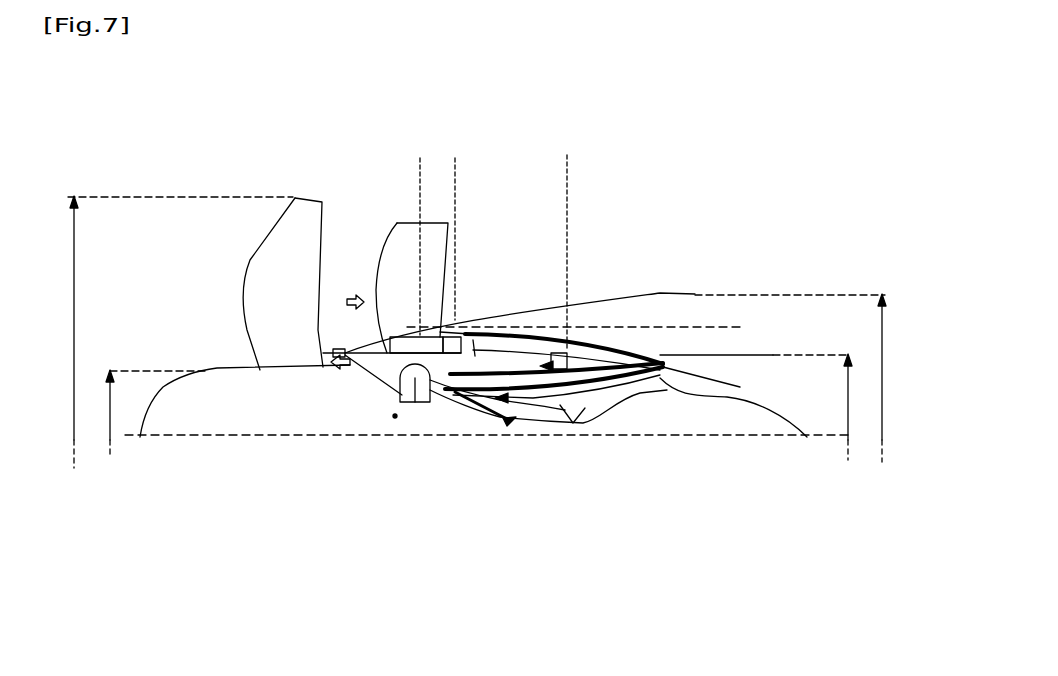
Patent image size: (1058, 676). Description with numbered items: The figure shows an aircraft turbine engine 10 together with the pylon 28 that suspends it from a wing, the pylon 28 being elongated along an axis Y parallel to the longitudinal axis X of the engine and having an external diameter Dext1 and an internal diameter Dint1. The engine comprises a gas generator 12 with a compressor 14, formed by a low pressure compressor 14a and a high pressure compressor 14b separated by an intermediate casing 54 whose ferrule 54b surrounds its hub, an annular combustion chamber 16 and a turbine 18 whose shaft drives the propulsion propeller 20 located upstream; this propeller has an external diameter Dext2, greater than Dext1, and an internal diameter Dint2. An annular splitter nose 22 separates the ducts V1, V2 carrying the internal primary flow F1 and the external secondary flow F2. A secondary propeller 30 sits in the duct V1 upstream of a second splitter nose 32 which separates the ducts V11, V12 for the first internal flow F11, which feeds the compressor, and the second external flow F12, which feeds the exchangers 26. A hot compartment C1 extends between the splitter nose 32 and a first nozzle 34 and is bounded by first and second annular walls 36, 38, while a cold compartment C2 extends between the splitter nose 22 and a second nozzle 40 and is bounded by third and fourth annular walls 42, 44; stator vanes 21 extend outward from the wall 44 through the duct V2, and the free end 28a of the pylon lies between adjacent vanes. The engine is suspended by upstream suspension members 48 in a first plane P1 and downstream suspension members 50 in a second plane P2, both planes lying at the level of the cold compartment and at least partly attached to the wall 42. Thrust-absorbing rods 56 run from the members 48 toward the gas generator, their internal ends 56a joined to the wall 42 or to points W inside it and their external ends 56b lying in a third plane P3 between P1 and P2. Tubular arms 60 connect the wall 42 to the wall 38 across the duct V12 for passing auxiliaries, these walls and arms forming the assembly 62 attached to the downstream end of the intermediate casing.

The aircraft turbine engine 10 is at (182, 343).
The gas generator 12 is at (226, 464).
The compressor 14 is at (505, 425).
The low pressure compressor 14a is at (452, 400).
The high pressure compressor 14b is at (512, 415).
The annular combustion chamber 16 is at (580, 405).
The turbine 18 is at (657, 380).
The propulsion propeller 20 is at (240, 277).
The stator vanes 21 is at (385, 242).
The annular splitter nose 22 is at (342, 352).
The exchangers 26 is at (636, 400).
The pylon 28 is at (515, 356).
The free end 28a is at (403, 337).
The secondary propeller 30 is at (414, 400).
The second annular splitter nose 32 is at (441, 353).
The first nozzle 34 is at (707, 387).
The first annular wall 36 is at (605, 405).
The second annular wall 38 is at (585, 405).
The second nozzle 40 is at (670, 397).
The third annular wall 42 is at (612, 352).
The fourth annular wall 44 is at (600, 360).
The upstream suspension members 48 is at (402, 368).
The downstream suspension members 50 is at (555, 392).
The intermediate casing 54 is at (535, 420).
The ferrule 54b is at (525, 350).
The thrust-absorbing rods 56 is at (436, 402).
The first radially internal ends 56a is at (400, 402).
The second radially external ends 56b is at (465, 360).
The tubular arms 60 is at (652, 385).
The assembly 62 is at (588, 337).
The first annular compartment C1 is at (660, 356).
The second annular compartment C2 is at (553, 366).
The internal primary flow F1 is at (334, 357).
The external secondary flow F2 is at (350, 300).
The first internal flow F11 is at (477, 400).
The second external flow F12 is at (505, 378).
The first plane P1 is at (418, 213).
The second plane P2 is at (568, 184).
The third plane P3 is at (457, 192).
The annular duct V1 is at (368, 384).
The annular duct V2 is at (377, 256).
The annular duct V11 is at (497, 420).
The annular duct V12 is at (470, 358).
The points W is at (395, 416).
The longitudinal axis X is at (828, 437).
The axis Y is at (473, 340).
The internal diameter Dint1 is at (848, 445).
The internal diameter Dint2 is at (110, 445).
The external diameter Dext1 is at (883, 447).
The external diameter Dext2 is at (58, 462).